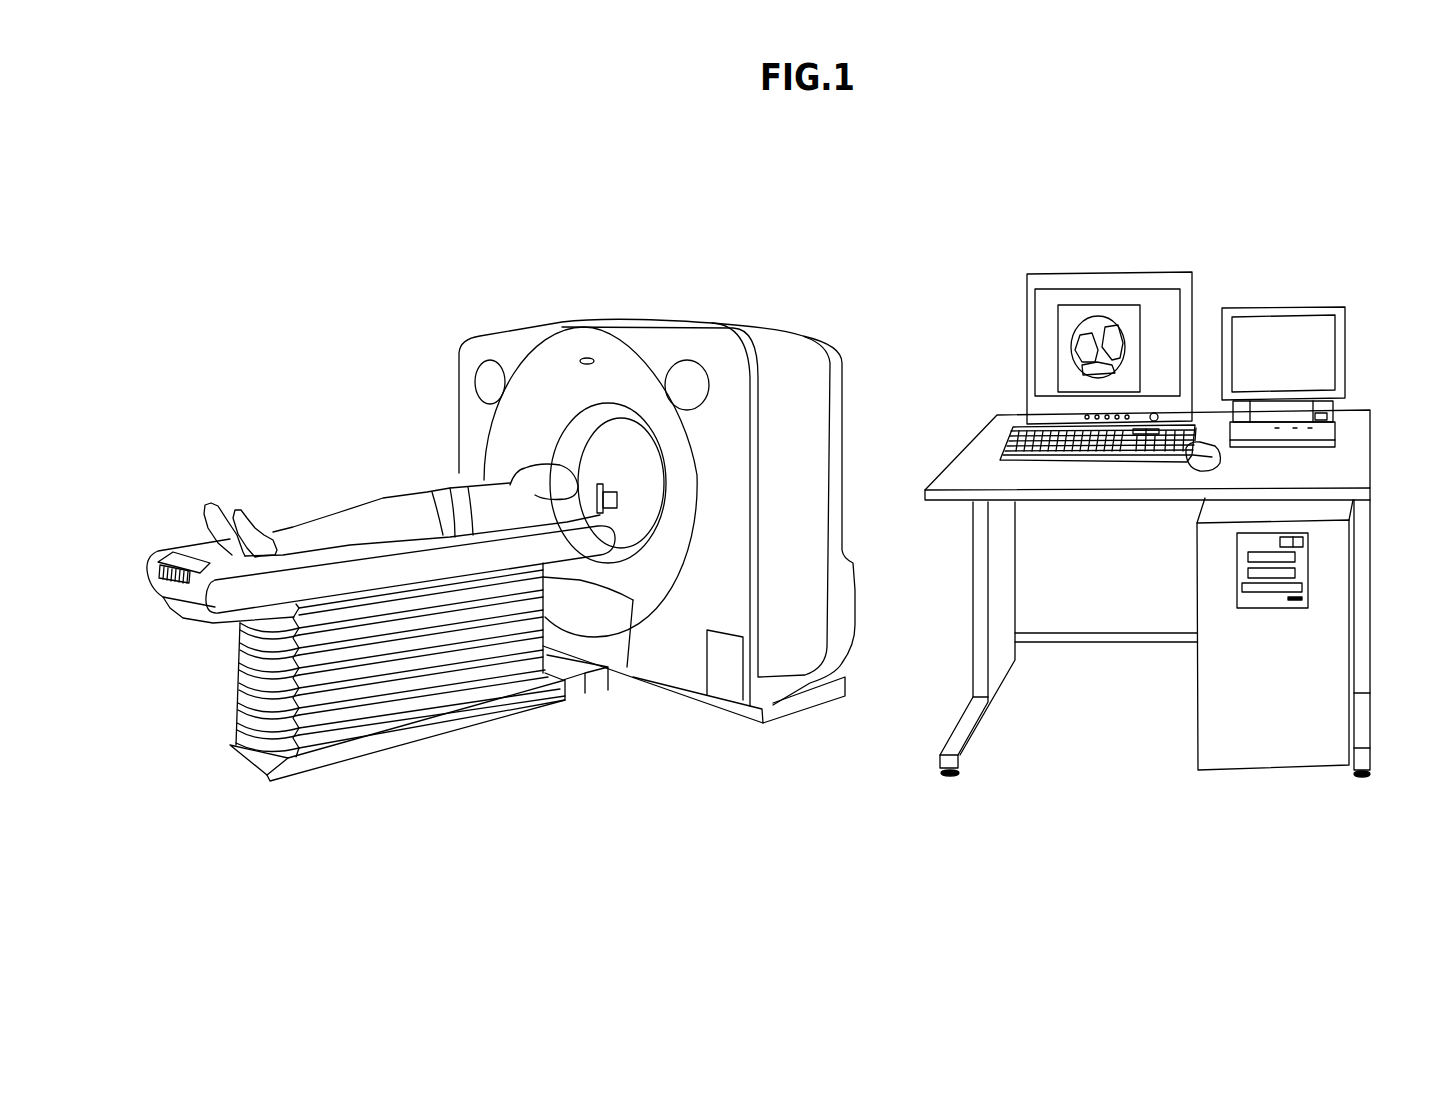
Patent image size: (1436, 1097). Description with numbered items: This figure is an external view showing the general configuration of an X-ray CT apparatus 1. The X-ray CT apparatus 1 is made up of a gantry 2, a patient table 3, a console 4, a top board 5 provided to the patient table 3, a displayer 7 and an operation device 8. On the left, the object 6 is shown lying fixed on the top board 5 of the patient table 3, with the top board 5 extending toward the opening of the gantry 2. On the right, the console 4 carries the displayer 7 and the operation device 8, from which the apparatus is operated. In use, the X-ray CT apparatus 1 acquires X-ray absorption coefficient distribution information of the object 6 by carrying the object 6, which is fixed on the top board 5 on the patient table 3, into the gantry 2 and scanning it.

The X-ray CT apparatus 1 is at (824, 270).
The gantry 2 is at (601, 321).
The patient table 3 is at (187, 620).
The console 4 is at (1372, 447).
The top board 5 is at (205, 553).
The object 6 is at (452, 486).
The displayer 7 is at (1110, 273).
The operation device 8 is at (1000, 441).